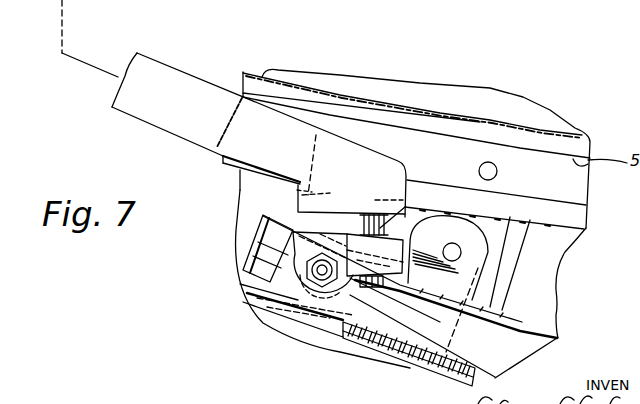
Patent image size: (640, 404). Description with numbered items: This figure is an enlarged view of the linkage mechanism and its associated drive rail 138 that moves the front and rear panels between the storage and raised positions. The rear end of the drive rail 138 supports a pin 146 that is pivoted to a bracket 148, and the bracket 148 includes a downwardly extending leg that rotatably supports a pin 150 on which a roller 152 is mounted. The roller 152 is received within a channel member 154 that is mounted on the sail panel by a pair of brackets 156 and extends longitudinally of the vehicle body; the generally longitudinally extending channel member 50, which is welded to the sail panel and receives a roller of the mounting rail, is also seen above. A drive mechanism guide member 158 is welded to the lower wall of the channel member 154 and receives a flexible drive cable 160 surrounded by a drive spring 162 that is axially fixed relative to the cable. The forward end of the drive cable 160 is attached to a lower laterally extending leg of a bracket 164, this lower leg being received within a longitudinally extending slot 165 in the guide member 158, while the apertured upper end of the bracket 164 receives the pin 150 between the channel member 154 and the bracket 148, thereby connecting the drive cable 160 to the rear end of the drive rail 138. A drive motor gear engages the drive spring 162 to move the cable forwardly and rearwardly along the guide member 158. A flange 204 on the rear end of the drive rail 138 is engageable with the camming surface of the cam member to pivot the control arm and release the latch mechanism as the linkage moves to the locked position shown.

The channel member 50 is at (540, 132).
The drive rail 138 is at (172, 80).
The pin 146 is at (404, 172).
The bracket 148 is at (326, 233).
The pin 150 is at (248, 302).
The roller 152 is at (295, 247).
The channel member 154 is at (523, 327).
The brackets 156 is at (483, 254).
The drive mechanism guide member 158 is at (298, 313).
The drive cable 160 is at (427, 372).
The drive spring 162 is at (387, 370).
The bracket 164 is at (295, 282).
The slot 165 is at (335, 345).
The flange 204 is at (299, 163).